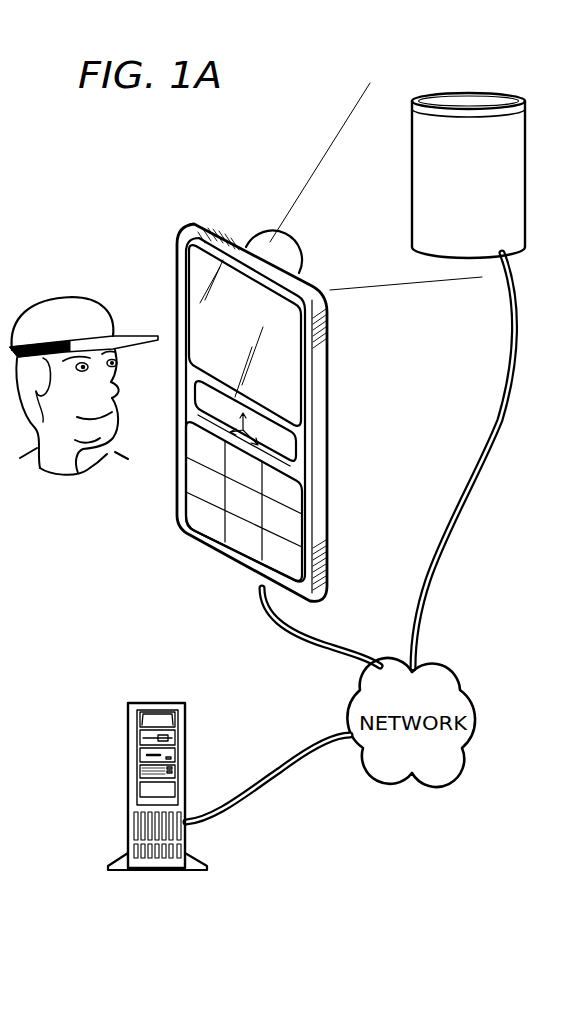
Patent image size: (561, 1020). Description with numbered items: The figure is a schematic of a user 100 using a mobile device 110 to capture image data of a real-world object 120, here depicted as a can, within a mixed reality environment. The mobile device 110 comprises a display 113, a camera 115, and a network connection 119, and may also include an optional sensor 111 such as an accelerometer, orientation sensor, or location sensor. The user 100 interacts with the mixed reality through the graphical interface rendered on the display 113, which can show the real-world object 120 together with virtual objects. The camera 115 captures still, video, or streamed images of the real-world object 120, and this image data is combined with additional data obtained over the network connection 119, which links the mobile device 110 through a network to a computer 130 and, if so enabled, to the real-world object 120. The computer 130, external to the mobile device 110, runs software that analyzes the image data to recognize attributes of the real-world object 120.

The user 100 is at (82, 478).
The mobile device 110 is at (188, 214).
The sensor 111 is at (287, 450).
The display 113 is at (284, 340).
The camera 115 is at (298, 248).
The network connection 119 is at (258, 590).
The real-world object 120 is at (412, 192).
The computer 130 is at (128, 720).